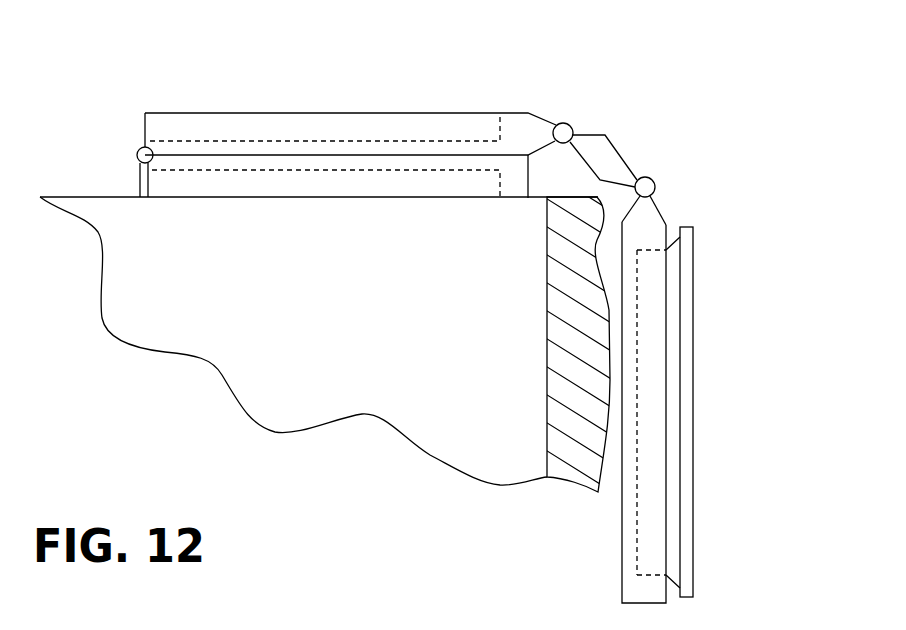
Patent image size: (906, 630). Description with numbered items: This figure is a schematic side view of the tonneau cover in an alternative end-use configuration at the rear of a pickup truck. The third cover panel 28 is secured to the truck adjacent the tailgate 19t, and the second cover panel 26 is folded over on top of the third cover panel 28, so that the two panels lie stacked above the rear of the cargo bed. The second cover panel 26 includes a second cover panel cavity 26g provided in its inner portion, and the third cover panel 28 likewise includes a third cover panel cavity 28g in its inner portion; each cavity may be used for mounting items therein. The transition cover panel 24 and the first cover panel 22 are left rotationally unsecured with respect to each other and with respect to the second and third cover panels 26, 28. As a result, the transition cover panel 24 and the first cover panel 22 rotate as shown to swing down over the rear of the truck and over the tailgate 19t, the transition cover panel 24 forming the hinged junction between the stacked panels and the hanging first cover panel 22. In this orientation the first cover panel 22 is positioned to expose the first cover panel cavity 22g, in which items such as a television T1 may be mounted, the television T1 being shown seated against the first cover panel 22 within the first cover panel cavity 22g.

The tailgate 19t is at (547, 442).
The second cover panel 26 is at (352, 113).
The second cover panel cavity 26g is at (415, 116).
The third cover panel 28 is at (316, 198).
The third cover panel cavity 28g is at (416, 200).
The transition cover panel 24 is at (612, 138).
The first cover panel 22 is at (622, 537).
The first cover panel cavity 22g is at (652, 432).
The television T1 is at (693, 302).